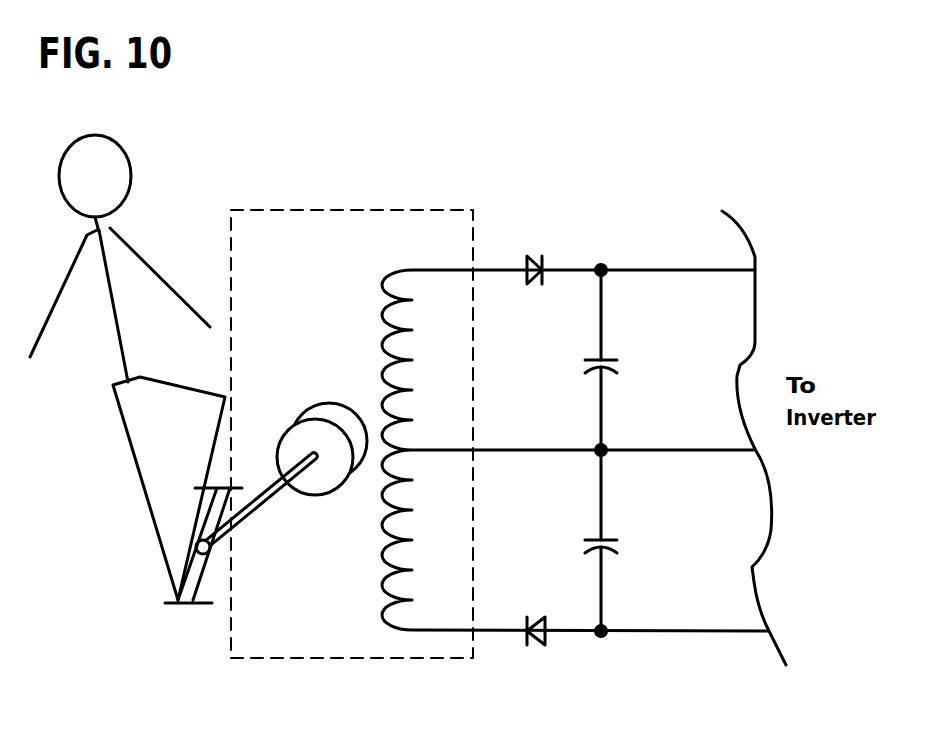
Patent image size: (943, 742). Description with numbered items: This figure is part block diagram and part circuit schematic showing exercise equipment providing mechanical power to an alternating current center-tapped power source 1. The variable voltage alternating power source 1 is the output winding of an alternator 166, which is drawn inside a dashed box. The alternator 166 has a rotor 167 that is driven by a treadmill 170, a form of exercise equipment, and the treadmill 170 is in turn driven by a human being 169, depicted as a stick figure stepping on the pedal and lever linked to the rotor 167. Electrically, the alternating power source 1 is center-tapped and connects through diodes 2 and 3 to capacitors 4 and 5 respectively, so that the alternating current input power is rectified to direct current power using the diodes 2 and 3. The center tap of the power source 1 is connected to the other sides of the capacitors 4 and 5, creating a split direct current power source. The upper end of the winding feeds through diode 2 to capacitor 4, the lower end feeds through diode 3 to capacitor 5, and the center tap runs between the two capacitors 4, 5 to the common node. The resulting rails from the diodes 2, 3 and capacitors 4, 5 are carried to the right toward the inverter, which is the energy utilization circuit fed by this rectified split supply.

The variable voltage alternating power source 1 is at (378, 268).
The diode 2 is at (537, 257).
The diode 3 is at (541, 645).
The capacitor 4 is at (610, 362).
The capacitor 5 is at (613, 538).
The alternator 166 is at (280, 210).
The rotor 167 is at (328, 403).
The human being 169 is at (133, 457).
The treadmill 170 is at (202, 606).